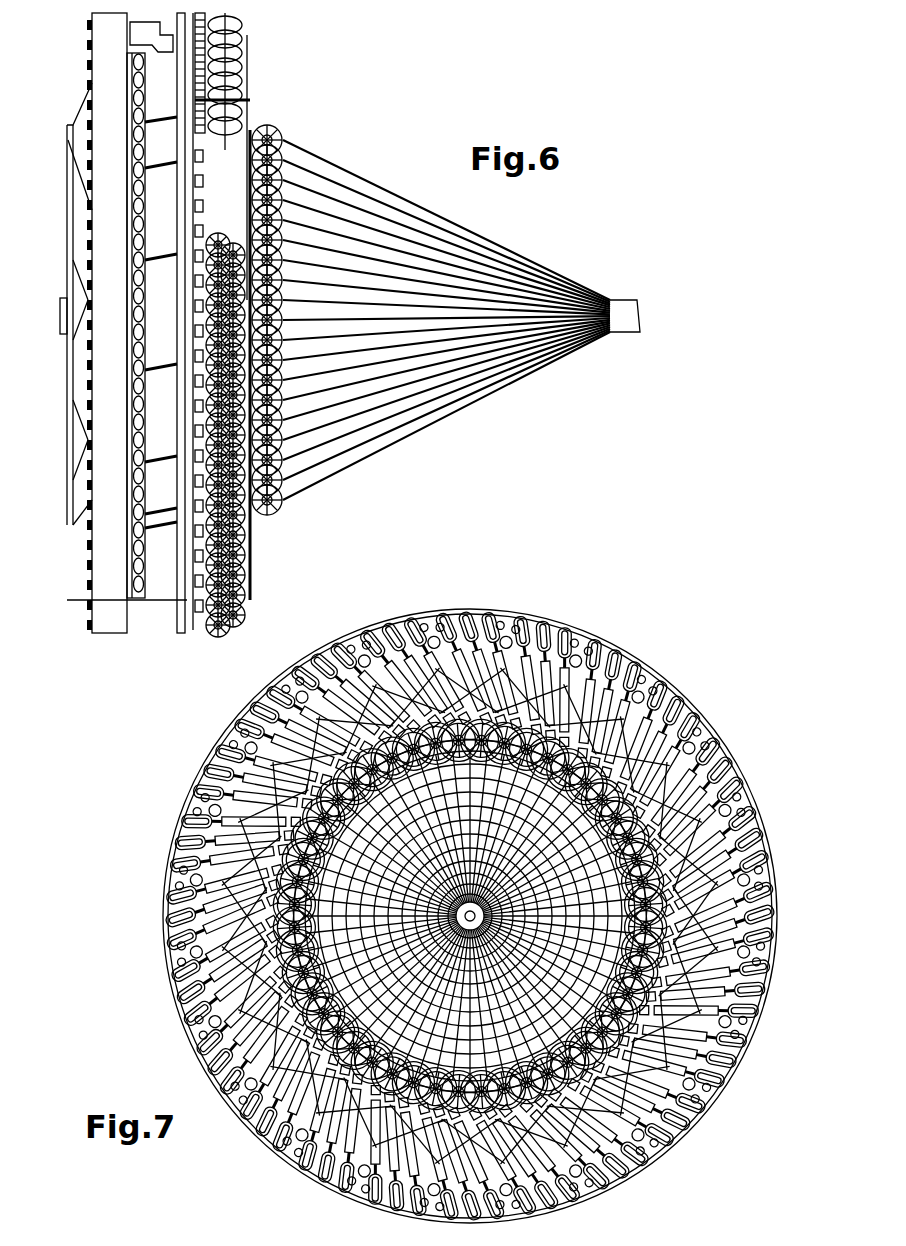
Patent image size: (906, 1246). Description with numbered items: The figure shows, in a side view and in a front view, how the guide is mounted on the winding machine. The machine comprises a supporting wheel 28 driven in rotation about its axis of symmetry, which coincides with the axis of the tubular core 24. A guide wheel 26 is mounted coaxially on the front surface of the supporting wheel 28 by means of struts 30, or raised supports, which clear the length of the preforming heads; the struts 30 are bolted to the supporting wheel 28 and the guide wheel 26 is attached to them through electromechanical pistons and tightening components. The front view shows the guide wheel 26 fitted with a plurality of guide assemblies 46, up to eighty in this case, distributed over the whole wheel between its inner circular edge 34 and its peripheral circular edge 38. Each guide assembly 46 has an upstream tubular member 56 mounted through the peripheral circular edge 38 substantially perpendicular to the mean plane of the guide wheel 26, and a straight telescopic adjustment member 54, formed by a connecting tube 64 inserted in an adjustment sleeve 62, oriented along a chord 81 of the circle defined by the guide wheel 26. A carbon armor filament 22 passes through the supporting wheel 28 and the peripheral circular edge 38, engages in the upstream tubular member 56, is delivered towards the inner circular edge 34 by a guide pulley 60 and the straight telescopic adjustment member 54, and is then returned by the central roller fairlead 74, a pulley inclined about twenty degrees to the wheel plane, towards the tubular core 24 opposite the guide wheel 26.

In FIG. 6, the carbon armor filament 22 is at (151, 607).
In FIG. 6, the tubular core 24 is at (624, 290).
In FIG. 6, the guide wheel 26 is at (187, 630).
In FIG. 7, the guide wheel 26 is at (410, 608).
In FIG. 6, the supporting wheel 28 is at (104, 628).
In FIG. 6, the struts 30 is at (165, 125).
In FIG. 7, the inner circular edge 34 is at (168, 937).
In FIG. 7, the peripheral circular edge 38 is at (222, 722).
In FIG. 7, the guide assembly 46 is at (655, 661).
In FIG. 7, the straight telescopic adjustment member 54 is at (300, 1165).
In FIG. 6, the upstream tubular member 56 is at (163, 600).
In FIG. 7, the upstream tubular member 56 is at (640, 645).
In FIG. 6, the guide pulley 60 is at (242, 615).
In FIG. 7, the guide pulley 60 is at (598, 626).
In FIG. 7, the adjustment sleeve 62 is at (683, 690).
In FIG. 7, the connecting tube 64 is at (700, 718).
In FIG. 6, the central roller fairlead 74 is at (282, 522).
In FIG. 7, the central roller fairlead 74 is at (570, 630).
In FIG. 7, the chord 81 is at (562, 880).